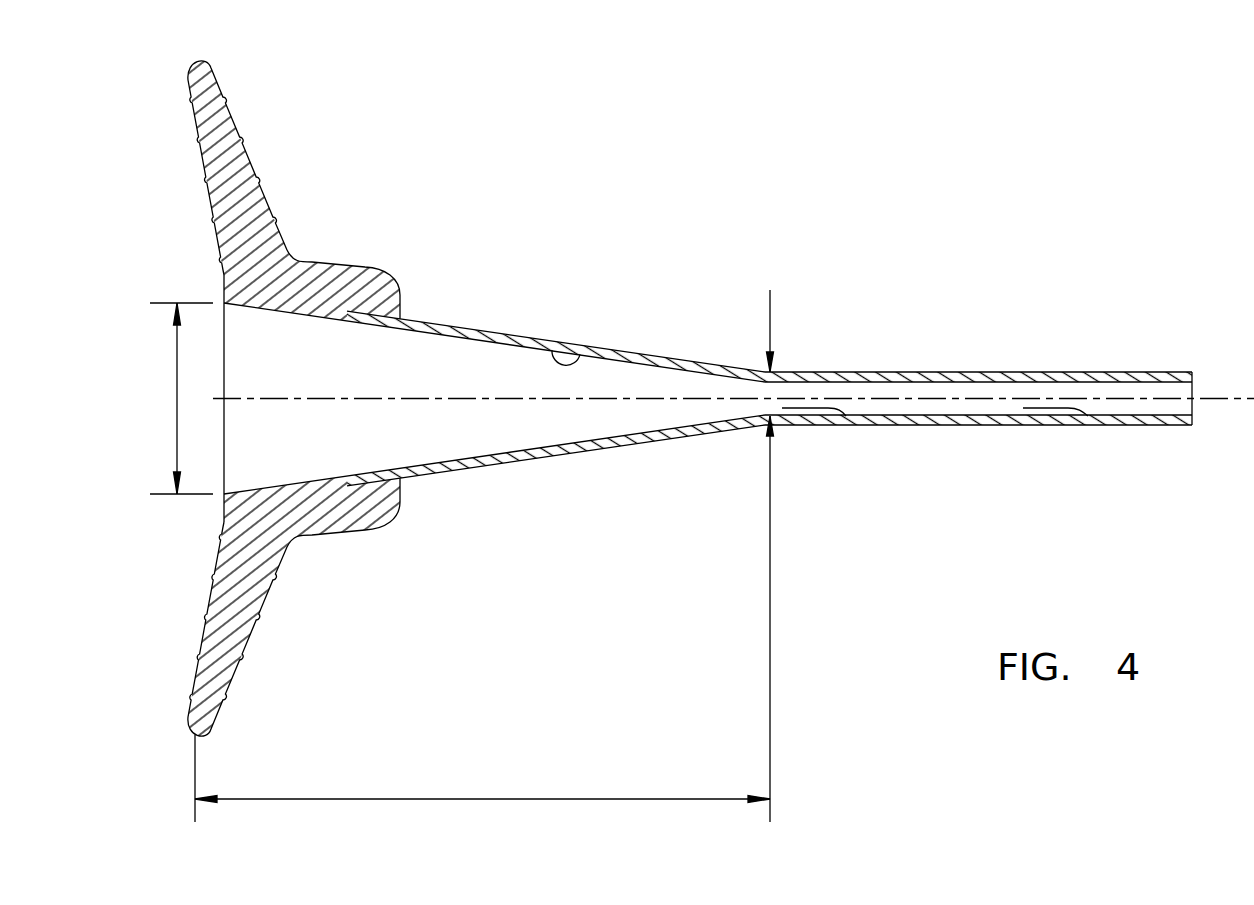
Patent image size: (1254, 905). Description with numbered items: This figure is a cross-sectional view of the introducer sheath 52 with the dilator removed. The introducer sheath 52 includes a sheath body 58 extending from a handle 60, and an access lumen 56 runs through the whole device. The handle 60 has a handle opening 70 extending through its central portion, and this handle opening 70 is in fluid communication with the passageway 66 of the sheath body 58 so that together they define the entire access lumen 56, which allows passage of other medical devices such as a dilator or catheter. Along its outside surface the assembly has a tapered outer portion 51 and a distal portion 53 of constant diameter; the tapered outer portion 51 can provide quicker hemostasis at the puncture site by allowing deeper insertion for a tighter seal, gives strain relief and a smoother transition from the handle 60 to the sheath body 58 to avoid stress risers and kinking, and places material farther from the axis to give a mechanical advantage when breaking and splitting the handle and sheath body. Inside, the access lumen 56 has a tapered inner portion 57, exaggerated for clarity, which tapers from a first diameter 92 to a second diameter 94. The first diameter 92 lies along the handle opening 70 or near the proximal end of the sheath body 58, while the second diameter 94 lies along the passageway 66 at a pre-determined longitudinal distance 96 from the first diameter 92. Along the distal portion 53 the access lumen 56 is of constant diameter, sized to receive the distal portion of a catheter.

The tapered outer portion 51 is at (494, 330).
The introducer sheath 52 is at (618, 183).
The distal portion 53 is at (972, 426).
The access lumen 56 is at (846, 421).
The tapered inner portion 57 is at (582, 356).
The sheath body 58 is at (878, 372).
The handle 60 is at (327, 262).
The passageway 66 is at (1088, 426).
The handle opening 70 is at (220, 398).
The first diameter 92 is at (176, 400).
The second diameter 94 is at (771, 320).
The longitudinal distance 96 is at (488, 798).